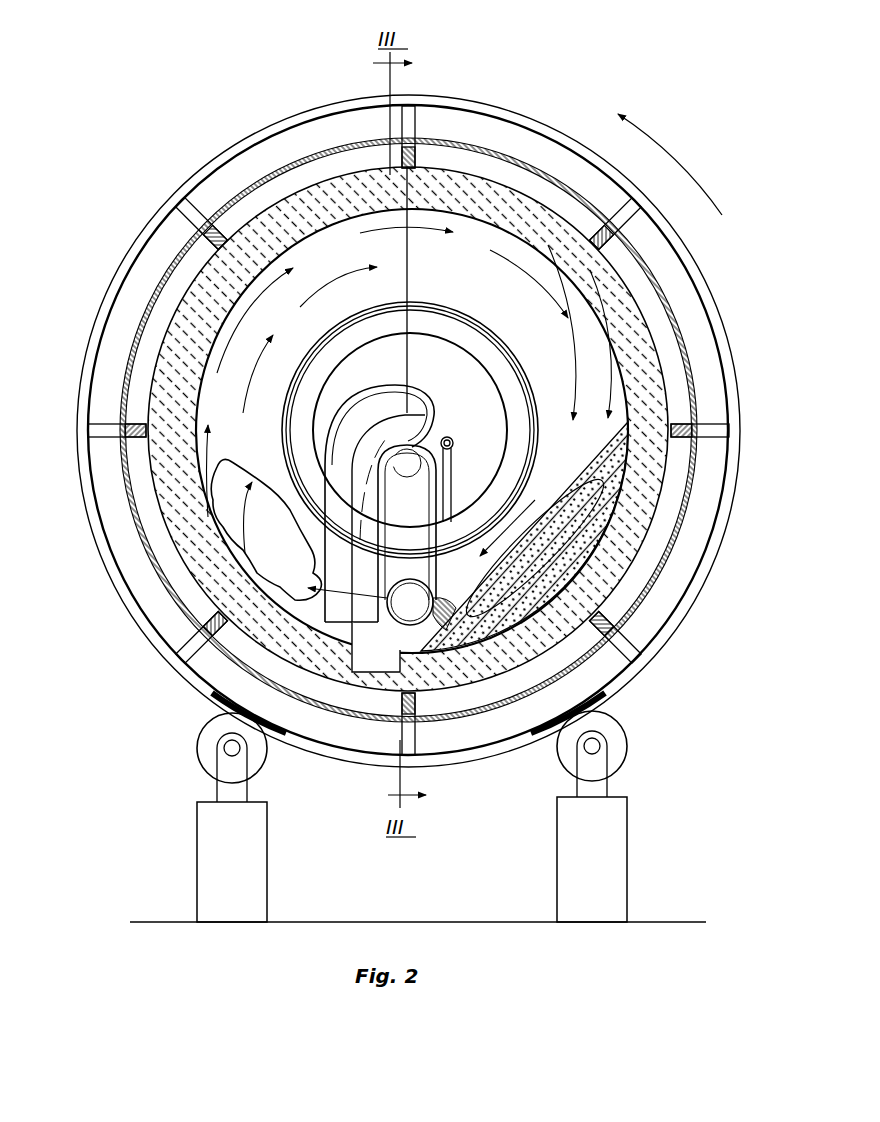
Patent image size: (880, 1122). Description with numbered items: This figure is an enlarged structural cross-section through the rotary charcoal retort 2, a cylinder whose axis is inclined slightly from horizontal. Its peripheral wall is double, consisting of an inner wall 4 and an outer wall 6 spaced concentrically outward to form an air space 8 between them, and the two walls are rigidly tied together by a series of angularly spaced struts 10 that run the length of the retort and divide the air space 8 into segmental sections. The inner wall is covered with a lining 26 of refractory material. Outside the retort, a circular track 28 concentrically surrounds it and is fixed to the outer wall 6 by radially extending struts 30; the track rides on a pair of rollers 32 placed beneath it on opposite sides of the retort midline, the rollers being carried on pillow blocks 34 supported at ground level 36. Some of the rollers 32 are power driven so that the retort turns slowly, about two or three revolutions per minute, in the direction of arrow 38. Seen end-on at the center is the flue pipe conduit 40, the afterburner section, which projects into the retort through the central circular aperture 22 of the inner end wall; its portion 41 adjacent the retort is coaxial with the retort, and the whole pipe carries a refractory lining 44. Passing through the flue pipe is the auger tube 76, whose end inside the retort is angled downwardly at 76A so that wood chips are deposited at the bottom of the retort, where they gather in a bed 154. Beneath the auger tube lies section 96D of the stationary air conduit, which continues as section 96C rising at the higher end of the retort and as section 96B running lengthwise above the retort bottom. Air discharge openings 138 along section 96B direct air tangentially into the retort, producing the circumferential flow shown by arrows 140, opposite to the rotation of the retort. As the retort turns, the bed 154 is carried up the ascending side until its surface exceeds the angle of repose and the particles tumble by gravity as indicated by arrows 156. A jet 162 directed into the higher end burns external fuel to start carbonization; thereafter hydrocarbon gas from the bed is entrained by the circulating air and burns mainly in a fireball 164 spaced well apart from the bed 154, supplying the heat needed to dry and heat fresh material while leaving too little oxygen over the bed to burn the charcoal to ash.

The retort 2 is at (668, 289).
The inner wall 4 is at (653, 337).
The outer wall 6 is at (717, 350).
The air space 8 is at (637, 272).
The struts 10 is at (392, 140).
The central circular aperture 22 is at (481, 331).
The lining of refractory material 26 is at (500, 193).
The circular tracks 28 is at (253, 133).
The struts 30 is at (409, 122).
The rollers 32 is at (198, 750).
The pillow blocks 34 is at (200, 866).
The ground level 36 is at (405, 921).
The arrow 38 is at (700, 191).
The flue pipe conduit 40 is at (425, 310).
The portion of flue pipe 41 is at (395, 305).
The lining of refractory material 44 is at (369, 335).
The auger tube 76 is at (433, 398).
The downwardly angled end portion of auger tube 76A is at (369, 624).
The air conduit section 96B is at (441, 604).
The air conduit section 96C is at (428, 511).
The air conduit section 96D is at (453, 463).
The air discharge openings 138 is at (378, 592).
The arrows 140 is at (363, 233).
The bed 154 is at (598, 539).
The arrows 156 is at (586, 570).
The jet 162 is at (450, 437).
The fireball 164 is at (243, 478).